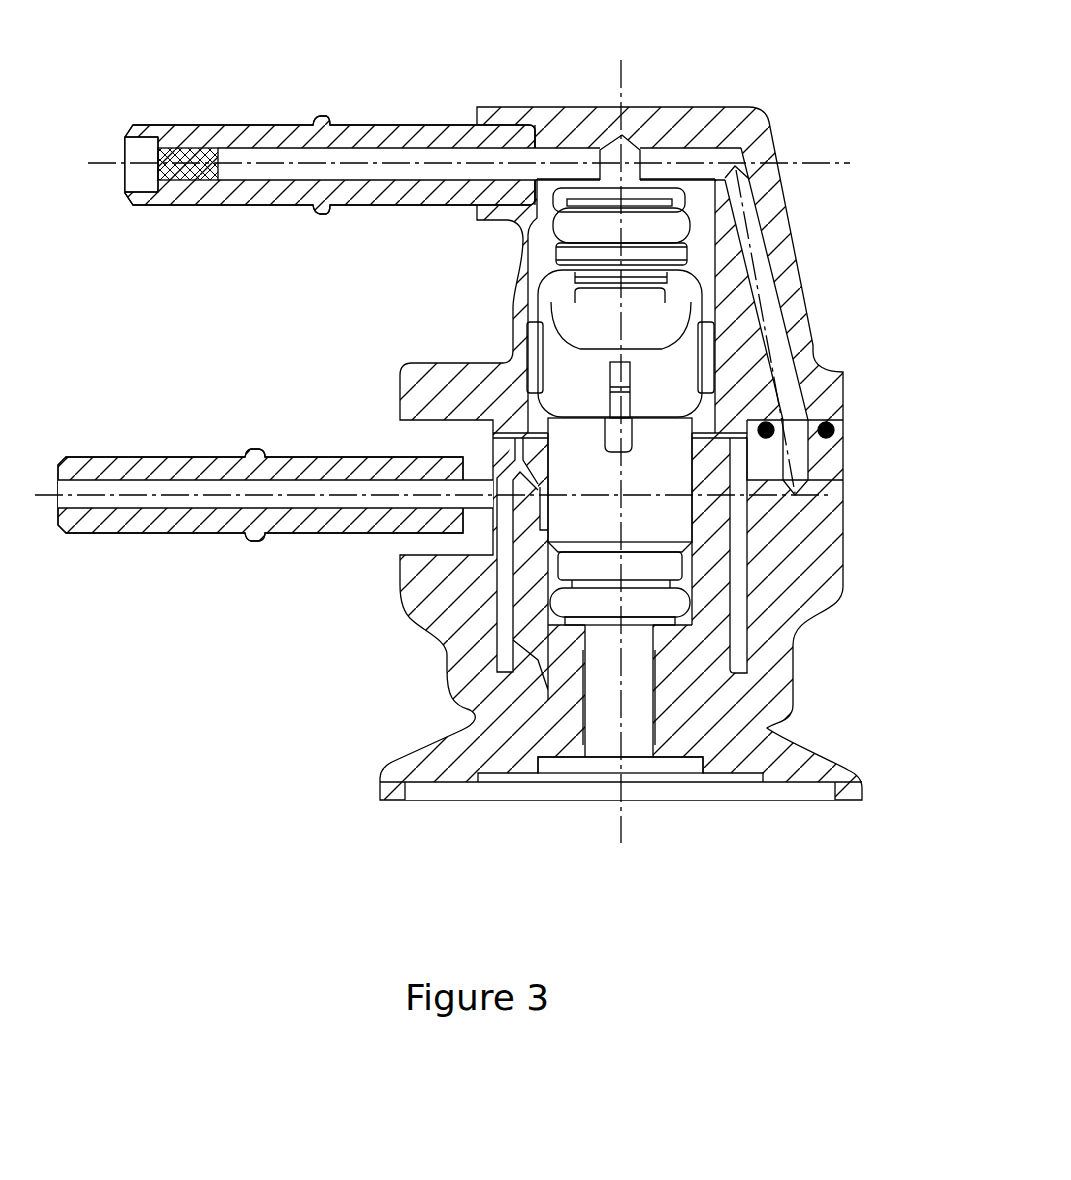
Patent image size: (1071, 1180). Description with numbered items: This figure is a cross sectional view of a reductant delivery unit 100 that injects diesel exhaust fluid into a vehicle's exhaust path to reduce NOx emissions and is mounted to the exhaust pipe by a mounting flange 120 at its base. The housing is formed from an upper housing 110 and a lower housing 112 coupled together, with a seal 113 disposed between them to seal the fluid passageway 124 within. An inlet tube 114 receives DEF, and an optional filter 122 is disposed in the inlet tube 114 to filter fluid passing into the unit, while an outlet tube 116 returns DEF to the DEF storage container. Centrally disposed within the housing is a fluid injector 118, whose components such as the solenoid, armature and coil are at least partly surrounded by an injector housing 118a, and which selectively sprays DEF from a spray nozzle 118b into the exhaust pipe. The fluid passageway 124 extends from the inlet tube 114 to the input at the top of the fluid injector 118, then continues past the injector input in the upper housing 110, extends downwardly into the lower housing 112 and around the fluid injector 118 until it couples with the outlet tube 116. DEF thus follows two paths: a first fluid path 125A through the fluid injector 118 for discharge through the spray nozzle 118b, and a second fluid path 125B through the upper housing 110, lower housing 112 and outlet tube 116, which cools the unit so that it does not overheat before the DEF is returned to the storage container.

The reductant delivery unit 100 is at (124, 44).
The upper housing 110 is at (808, 236).
The lower housing 112 is at (852, 488).
The seal 113 is at (848, 426).
The inlet tube 114 is at (352, 121).
The outlet tube 116 is at (207, 541).
The fluid injector 118 is at (643, 478).
The injector housing 118a is at (519, 650).
The spray nozzle 118b is at (660, 766).
The mounting flange 120 is at (397, 823).
The filter 122 is at (190, 138).
The fluid passageway 124 is at (556, 150).
The first fluid path 125A is at (622, 177).
The second fluid path 125B is at (776, 298).